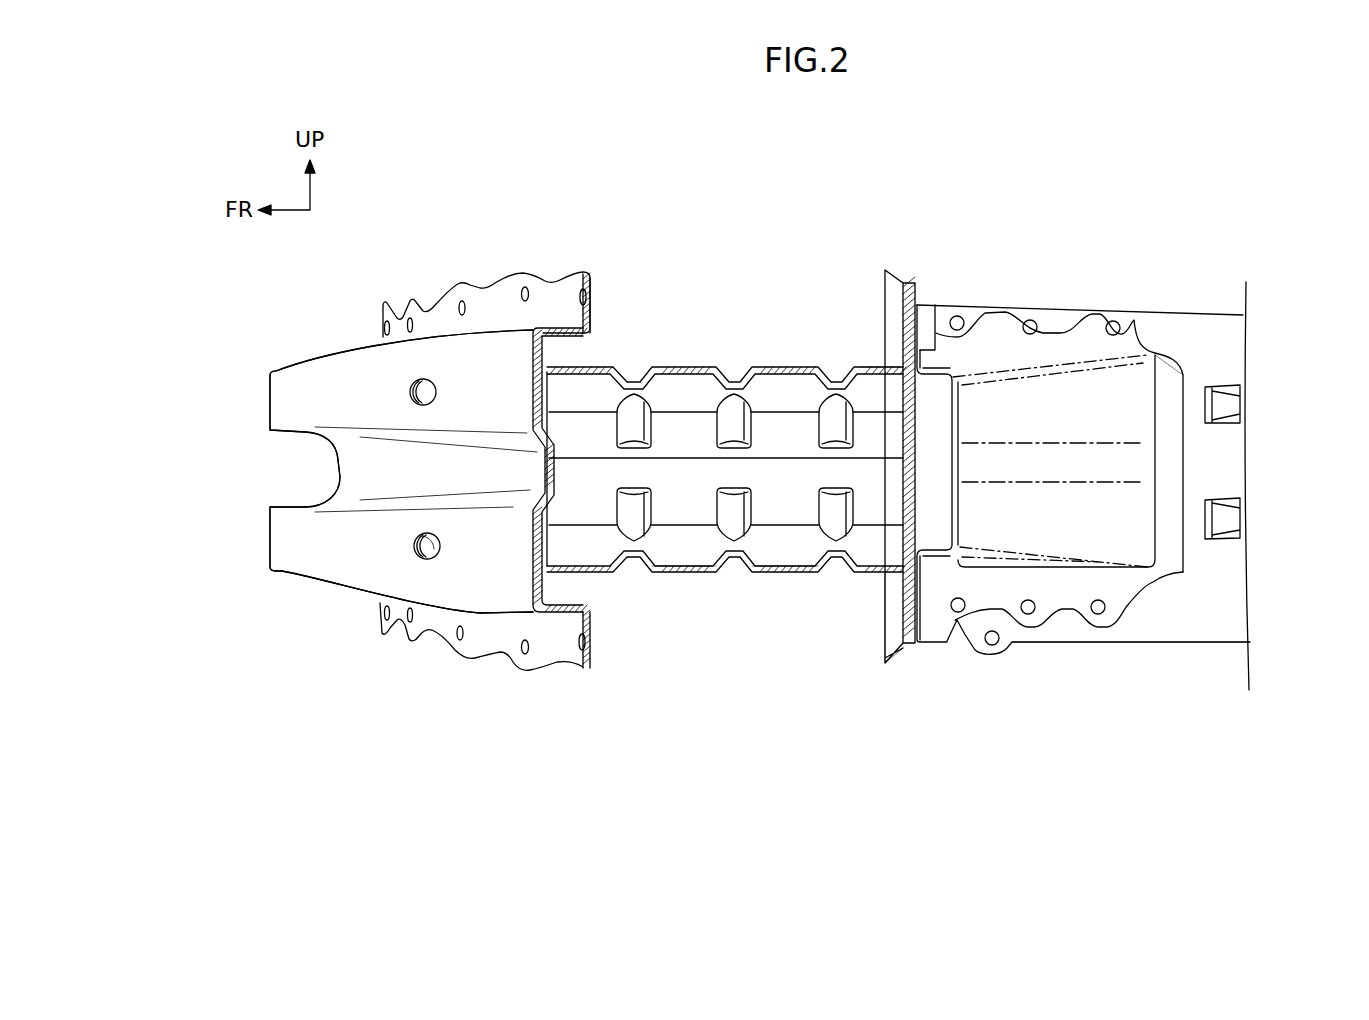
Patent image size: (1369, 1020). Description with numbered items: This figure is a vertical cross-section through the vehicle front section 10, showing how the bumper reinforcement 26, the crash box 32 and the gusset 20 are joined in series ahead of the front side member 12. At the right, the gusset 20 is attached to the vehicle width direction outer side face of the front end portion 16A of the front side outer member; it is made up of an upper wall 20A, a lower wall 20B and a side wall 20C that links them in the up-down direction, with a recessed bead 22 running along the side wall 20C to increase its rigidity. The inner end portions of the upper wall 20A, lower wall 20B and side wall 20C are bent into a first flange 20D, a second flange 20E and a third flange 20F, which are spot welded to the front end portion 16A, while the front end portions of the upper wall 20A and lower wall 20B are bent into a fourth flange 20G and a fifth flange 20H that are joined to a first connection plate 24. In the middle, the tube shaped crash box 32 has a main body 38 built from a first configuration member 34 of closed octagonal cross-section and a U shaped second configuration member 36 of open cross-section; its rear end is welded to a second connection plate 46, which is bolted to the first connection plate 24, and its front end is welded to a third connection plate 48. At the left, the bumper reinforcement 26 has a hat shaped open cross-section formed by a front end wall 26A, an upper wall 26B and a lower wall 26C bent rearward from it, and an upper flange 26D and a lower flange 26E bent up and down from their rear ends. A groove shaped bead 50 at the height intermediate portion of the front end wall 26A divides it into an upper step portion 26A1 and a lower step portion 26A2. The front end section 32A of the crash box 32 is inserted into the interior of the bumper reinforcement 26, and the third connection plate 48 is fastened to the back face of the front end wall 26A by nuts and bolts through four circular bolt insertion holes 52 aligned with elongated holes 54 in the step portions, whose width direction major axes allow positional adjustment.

The vehicle front section 10 is at (290, 658).
The front side member 12 is at (1221, 313).
The front end portion of the front side outer member 16A is at (1130, 625).
The gusset 20 is at (1143, 598).
The upper wall 20A is at (925, 362).
The lower wall 20B is at (925, 612).
The side wall 20C is at (1113, 397).
The first flange 20D is at (1048, 343).
The second flange 20E is at (1062, 585).
The third flange 20F is at (1167, 387).
The fourth flange 20G is at (935, 305).
The fifth flange 20H is at (947, 644).
The recessed bead 22 is at (1095, 455).
The first connection plate 24 is at (908, 280).
The bumper reinforcement 26 is at (326, 358).
The front end wall 26A is at (330, 553).
The upper step portion 26A1 is at (290, 400).
The lower step portion 26A2 is at (290, 539).
The upper wall 26B is at (499, 333).
The lower wall 26C is at (505, 615).
The upper flange 26D is at (560, 278).
The lower flange 26E is at (592, 648).
The crash box 32 is at (698, 366).
The front end section of the crash box 32A is at (572, 543).
The first configuration member 34 is at (684, 556).
The second configuration member 36 is at (758, 575).
The main body 38 is at (781, 365).
The second connection plate 46 is at (885, 283).
The third connection plate 48 is at (557, 363).
The bead 50 is at (303, 477).
The bolt insertion hole 52 is at (438, 548).
The elongated hole 54 is at (430, 560).